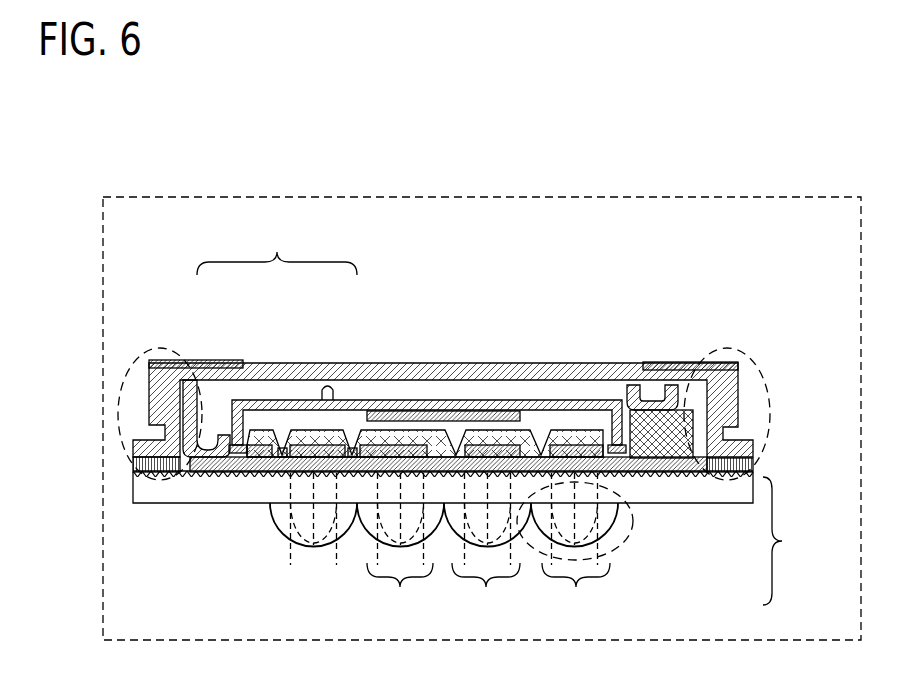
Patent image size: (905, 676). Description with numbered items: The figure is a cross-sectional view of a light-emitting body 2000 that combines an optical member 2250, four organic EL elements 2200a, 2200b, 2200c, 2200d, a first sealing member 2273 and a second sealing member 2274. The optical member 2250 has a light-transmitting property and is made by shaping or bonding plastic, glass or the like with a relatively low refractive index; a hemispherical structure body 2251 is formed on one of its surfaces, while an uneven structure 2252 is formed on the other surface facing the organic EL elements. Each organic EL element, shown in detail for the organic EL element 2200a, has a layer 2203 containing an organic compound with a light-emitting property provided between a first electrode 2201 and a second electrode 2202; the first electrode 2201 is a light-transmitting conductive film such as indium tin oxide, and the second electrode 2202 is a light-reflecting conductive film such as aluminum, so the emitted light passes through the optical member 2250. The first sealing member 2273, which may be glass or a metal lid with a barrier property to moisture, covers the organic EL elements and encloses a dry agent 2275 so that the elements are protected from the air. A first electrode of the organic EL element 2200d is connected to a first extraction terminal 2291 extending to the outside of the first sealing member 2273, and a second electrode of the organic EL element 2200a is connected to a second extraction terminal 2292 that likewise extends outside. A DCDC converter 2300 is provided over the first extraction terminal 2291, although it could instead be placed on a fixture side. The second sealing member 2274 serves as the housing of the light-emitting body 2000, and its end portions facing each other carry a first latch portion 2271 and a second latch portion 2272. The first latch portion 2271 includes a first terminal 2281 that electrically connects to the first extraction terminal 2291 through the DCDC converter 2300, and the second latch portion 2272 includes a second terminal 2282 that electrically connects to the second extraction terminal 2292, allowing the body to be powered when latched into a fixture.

The light-emitting body 2000 is at (184, 192).
The organic EL element 2200a is at (277, 247).
The organic EL element 2200b is at (400, 591).
The organic EL element 2200c is at (486, 592).
The organic EL element 2200d is at (576, 592).
The first electrode 2201 is at (348, 437).
The second electrode 2202 is at (272, 438).
The layer containing an organic compound with a light-emitting property 2203 is at (313, 437).
The optical member 2250 is at (568, 539).
The hemispherical structure body 2251 is at (503, 532).
The uneven structure 2252 is at (637, 483).
The first latch portion 2271 is at (729, 381).
The second latch portion 2272 is at (171, 381).
The first sealing member 2273 is at (507, 402).
The second sealing member 2274 is at (443, 381).
The dry agent 2275 is at (433, 407).
The first terminal 2281 is at (690, 331).
The second terminal 2282 is at (198, 358).
The first extraction terminal 2291 is at (700, 460).
The second extraction terminal 2292 is at (420, 524).
The DCDC converter 2300 is at (659, 419).